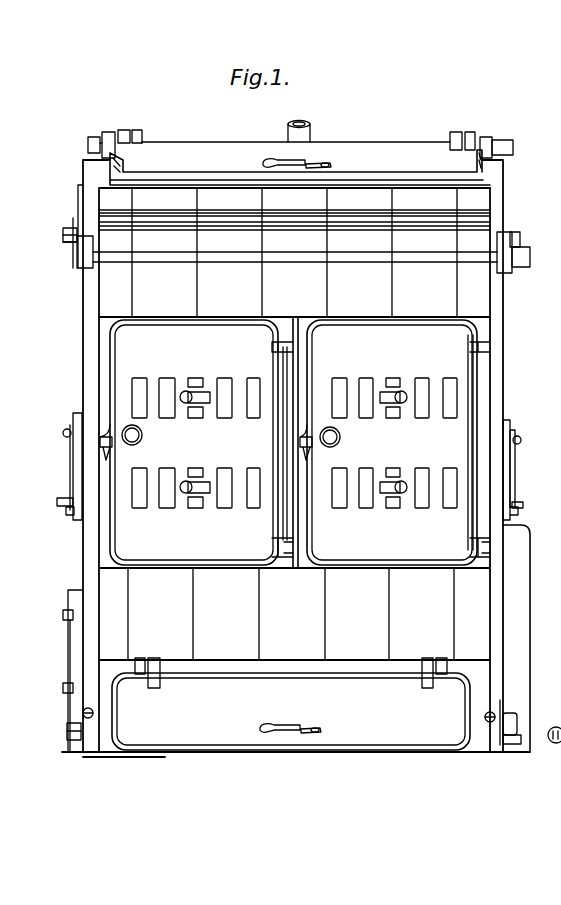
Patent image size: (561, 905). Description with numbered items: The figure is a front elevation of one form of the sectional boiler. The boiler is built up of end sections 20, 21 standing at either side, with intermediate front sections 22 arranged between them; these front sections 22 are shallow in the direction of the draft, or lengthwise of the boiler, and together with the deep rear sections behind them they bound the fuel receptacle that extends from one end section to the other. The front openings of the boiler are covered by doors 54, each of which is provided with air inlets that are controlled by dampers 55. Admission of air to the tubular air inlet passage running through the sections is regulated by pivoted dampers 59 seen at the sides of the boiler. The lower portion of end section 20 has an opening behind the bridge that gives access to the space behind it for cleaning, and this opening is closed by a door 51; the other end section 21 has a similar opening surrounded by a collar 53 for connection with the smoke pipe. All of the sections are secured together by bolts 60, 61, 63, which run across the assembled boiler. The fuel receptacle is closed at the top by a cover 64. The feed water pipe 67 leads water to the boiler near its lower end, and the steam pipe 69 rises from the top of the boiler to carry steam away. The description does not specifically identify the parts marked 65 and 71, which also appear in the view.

The end section 20 is at (84, 369).
The end section 21 is at (513, 456).
The intermediate front sections 22 is at (267, 592).
The door 51 is at (68, 657).
The collar 53 is at (517, 638).
The doors 54 is at (295, 442).
The dampers 55 is at (418, 408).
The pivoted dampers 59 is at (74, 465).
The bolt 60 is at (228, 143).
The bolt 61 is at (168, 255).
The bolt 63 is at (70, 732).
The cover 64 is at (332, 160).
The fastener 65 is at (554, 715).
The feed water pipe 67 is at (518, 736).
The steam pipe 69 is at (313, 133).
The lower panel 71 is at (291, 704).